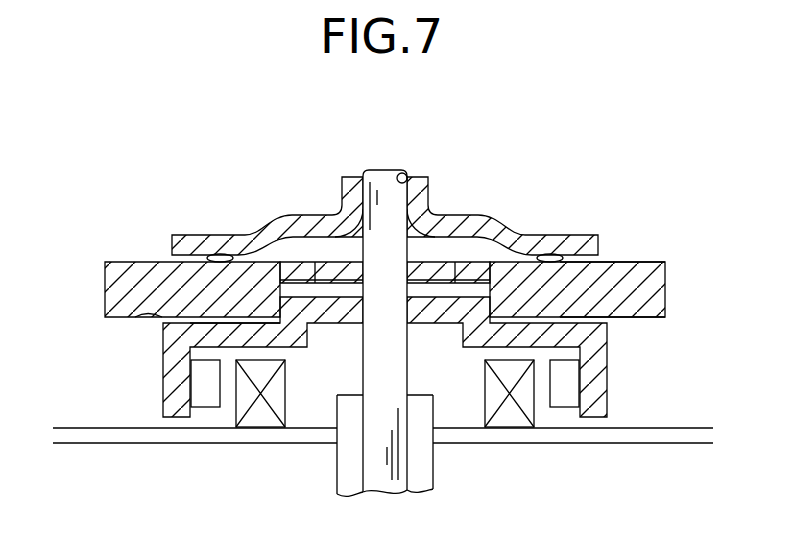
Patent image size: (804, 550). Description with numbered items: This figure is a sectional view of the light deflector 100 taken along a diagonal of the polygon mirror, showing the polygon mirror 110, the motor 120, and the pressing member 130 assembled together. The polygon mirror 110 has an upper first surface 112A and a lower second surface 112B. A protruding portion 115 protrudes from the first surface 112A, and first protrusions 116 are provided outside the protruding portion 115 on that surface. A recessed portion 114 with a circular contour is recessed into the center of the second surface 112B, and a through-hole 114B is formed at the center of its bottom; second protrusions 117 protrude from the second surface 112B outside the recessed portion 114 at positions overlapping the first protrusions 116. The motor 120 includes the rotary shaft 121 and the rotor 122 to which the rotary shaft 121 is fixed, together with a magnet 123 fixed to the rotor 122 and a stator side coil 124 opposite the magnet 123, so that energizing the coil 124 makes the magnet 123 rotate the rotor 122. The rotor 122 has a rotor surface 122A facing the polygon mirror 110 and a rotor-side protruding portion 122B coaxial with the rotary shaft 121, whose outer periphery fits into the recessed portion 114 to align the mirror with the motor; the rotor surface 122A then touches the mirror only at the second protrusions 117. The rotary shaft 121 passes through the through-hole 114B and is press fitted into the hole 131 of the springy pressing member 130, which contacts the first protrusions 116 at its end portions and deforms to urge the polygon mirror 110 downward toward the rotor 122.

The light deflector 100 is at (564, 145).
The polygon mirror 110 is at (648, 288).
The first surface 112A is at (627, 261).
The second surface 112B is at (645, 319).
The recessed portion 114 is at (477, 273).
The through-hole 114B is at (313, 271).
The protruding portion 115 is at (466, 259).
The first protrusions 116 is at (216, 255).
The second protrusions 117 is at (200, 321).
The motor 120 is at (158, 385).
The rotary shaft 121 is at (378, 173).
The rotor 122 is at (597, 380).
The rotor surface 122A is at (160, 312).
The rotor-side protruding portion 122B is at (330, 313).
The magnet 123 is at (208, 398).
The stator side coil 124 is at (262, 418).
The pressing member 130 is at (274, 212).
The hole 131 is at (398, 178).